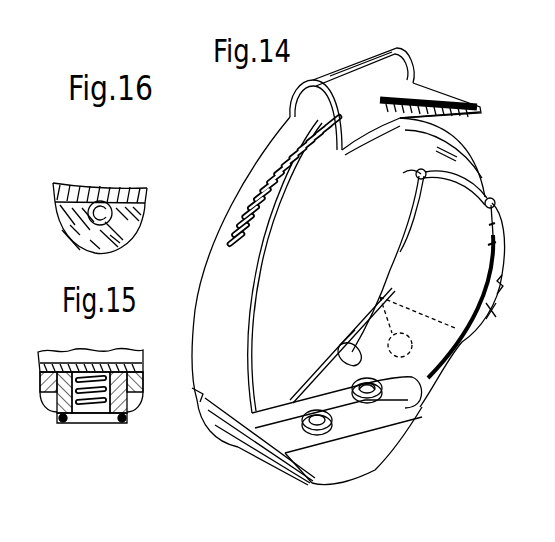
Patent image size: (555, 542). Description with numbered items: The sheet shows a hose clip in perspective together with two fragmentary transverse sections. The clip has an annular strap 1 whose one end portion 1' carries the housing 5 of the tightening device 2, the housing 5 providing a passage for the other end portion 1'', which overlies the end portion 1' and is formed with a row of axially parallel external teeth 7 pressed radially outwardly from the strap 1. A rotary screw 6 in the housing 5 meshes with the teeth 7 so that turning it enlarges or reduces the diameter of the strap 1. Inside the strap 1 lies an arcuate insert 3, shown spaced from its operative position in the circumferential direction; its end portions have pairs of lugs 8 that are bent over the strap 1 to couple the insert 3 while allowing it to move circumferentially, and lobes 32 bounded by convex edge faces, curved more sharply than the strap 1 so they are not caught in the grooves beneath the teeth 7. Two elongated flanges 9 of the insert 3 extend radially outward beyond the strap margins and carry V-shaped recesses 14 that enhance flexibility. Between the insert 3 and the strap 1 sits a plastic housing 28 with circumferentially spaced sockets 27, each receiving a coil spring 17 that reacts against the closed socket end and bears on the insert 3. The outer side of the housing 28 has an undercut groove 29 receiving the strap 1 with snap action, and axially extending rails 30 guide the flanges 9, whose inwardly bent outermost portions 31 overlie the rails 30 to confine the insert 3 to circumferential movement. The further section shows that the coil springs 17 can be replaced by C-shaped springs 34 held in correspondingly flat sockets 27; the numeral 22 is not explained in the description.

In FIG. 14, the strap 1 is at (257, 282).
In FIG. 14, the end portion of the strap 1' is at (447, 262).
In FIG. 14, the end portion of the strap 1'' is at (304, 219).
In FIG. 14, the tightening device 2 is at (290, 102).
In FIG. 14, the insert 3 is at (402, 242).
In FIG. 16, the insert 3 is at (80, 184).
In FIG. 15, the insert 3 is at (62, 362).
In FIG. 14, the housing 5 is at (368, 55).
In FIG. 14, the screw 6 is at (417, 67).
In FIG. 14, the teeth 7 is at (273, 163).
In FIG. 15, the teeth 7 is at (110, 402).
In FIG. 14, the projections 8 is at (445, 178).
In FIG. 14, the flanges 9 is at (345, 342).
In FIG. 15, the flanges 9 is at (55, 385).
In FIG. 14, the recesses 14 is at (493, 257).
In FIG. 14, the coil springs 17 is at (355, 345).
In FIG. 15, the coil springs 17 is at (93, 423).
In FIG. 14, the connecting element 22 is at (307, 21).
In FIG. 14, the sockets 27 is at (363, 405).
In FIG. 16, the sockets 27 is at (92, 243).
In FIG. 15, the sockets 27 is at (132, 418).
In FIG. 14, the housing 28 is at (358, 484).
In FIG. 16, the housing 28 is at (66, 240).
In FIG. 15, the housing 28 is at (53, 413).
In FIG. 15, the undercut groove 29 is at (80, 423).
In FIG. 14, the rails 30 is at (275, 405).
In FIG. 15, the rails 30 is at (42, 357).
In FIG. 14, the inwardly bent radially outermost portions 31 is at (428, 424).
In FIG. 15, the inwardly bent radially outermost portions 31 is at (47, 403).
In FIG. 14, the lobes 32 is at (453, 172).
In FIG. 16, the C-shaped springs 34 is at (120, 183).